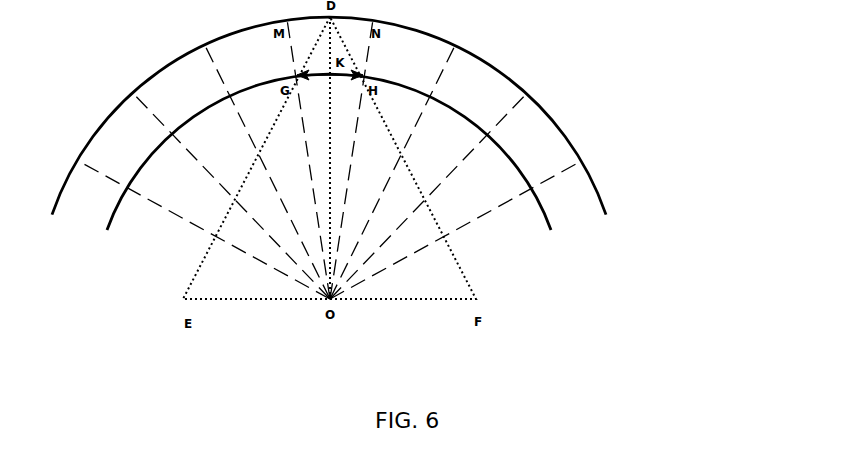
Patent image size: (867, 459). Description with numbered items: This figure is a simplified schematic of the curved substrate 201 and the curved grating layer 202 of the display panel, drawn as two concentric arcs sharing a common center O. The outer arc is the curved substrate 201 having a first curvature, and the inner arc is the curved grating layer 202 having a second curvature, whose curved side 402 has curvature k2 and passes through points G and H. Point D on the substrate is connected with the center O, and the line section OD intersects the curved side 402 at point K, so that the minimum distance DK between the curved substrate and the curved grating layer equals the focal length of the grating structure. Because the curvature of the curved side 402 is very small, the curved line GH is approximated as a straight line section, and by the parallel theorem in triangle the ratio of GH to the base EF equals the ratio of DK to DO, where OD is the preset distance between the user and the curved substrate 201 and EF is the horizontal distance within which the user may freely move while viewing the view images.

The curved substrate 201 is at (592, 178).
The curved grating layer 202 is at (547, 217).
The curved side of the grating structure 402 is at (353, 63).